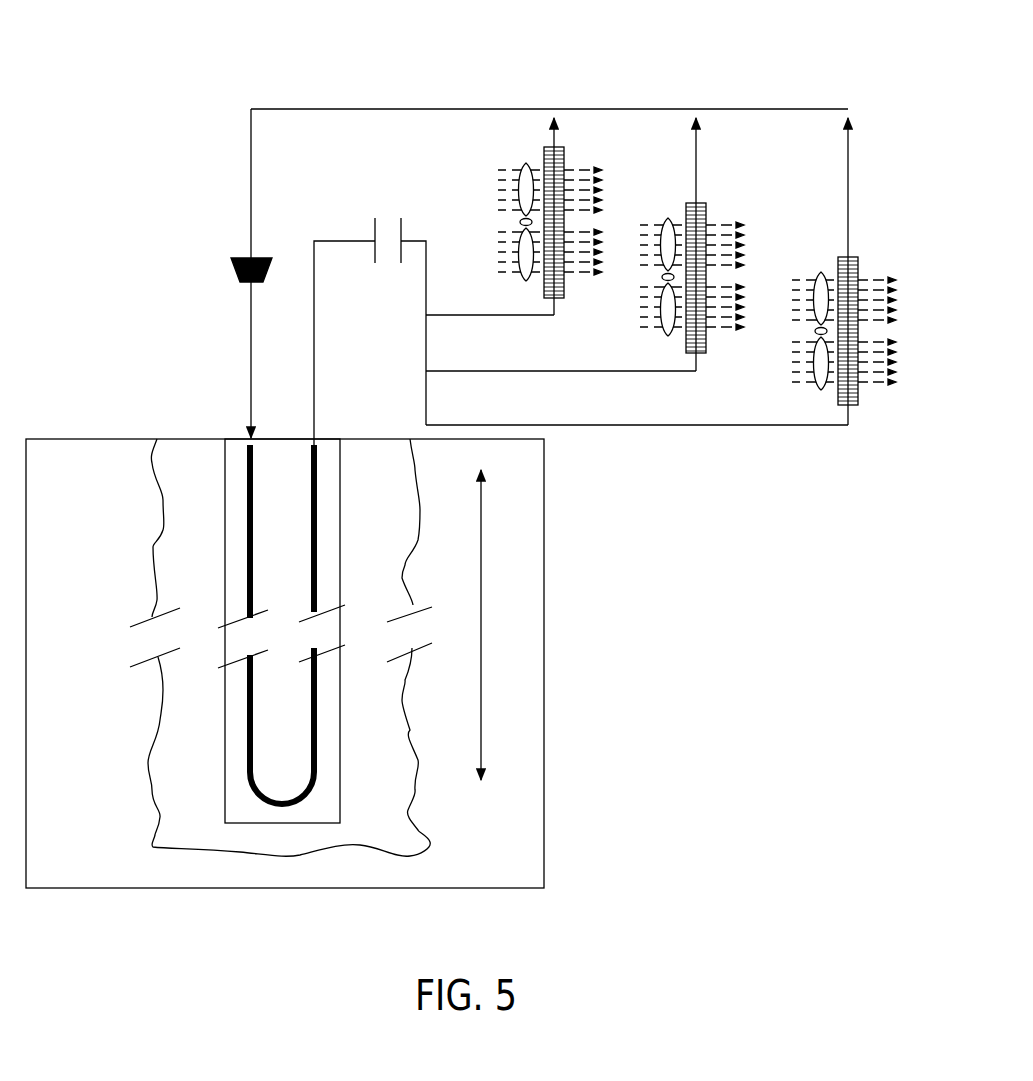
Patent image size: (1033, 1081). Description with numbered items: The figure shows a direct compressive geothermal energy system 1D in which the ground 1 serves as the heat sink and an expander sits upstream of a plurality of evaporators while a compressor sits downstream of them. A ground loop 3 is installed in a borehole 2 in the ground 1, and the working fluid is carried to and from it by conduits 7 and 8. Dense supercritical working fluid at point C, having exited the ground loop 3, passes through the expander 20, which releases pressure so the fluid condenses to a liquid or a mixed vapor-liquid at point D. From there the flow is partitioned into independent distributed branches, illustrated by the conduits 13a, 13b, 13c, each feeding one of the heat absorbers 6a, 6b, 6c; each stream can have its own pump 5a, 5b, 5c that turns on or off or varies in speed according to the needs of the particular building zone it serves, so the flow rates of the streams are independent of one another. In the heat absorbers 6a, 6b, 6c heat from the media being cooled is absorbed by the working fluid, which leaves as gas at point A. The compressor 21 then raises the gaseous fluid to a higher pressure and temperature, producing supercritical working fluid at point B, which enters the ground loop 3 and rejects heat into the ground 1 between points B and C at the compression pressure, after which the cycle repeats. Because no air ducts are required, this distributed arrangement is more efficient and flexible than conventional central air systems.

The direct compressive heating geothermal energy system 1D is at (186, 96).
The ground 1 is at (90, 439).
The borehole 2 is at (225, 474).
The ground loop 3 is at (312, 582).
The pump 5a is at (573, 233).
The pump 5b is at (713, 260).
The pump 5c is at (867, 287).
The heat absorber 6a is at (519, 203).
The heat absorber 6b is at (664, 251).
The heat absorber 6c is at (813, 304).
The supply conduit 7 is at (250, 210).
The return conduit 8 is at (336, 241).
The conduit 13a is at (490, 305).
The conduit 13b is at (561, 358).
The conduit 13c is at (637, 415).
The expander 20 is at (386, 218).
The compressor 21 is at (237, 280).